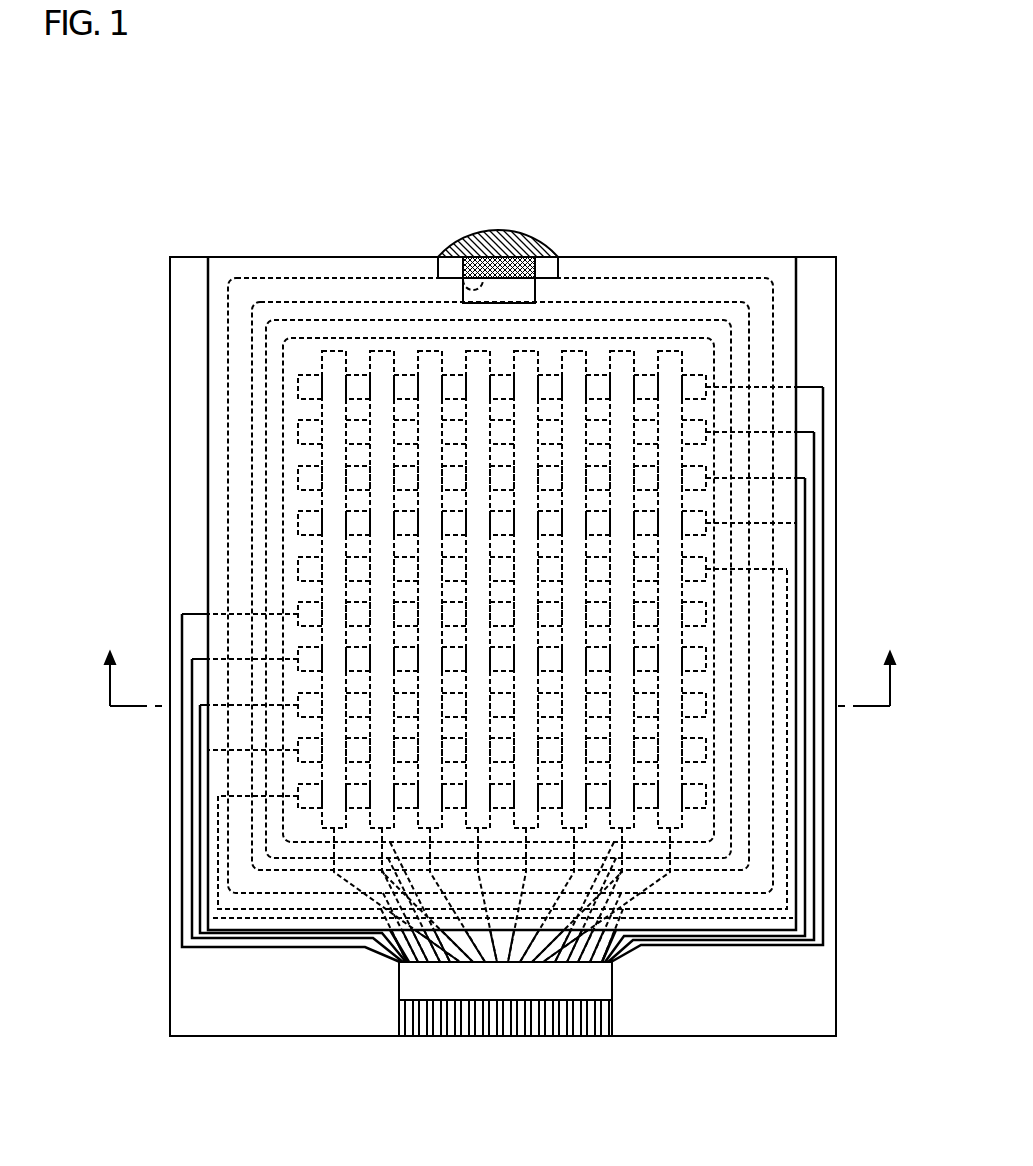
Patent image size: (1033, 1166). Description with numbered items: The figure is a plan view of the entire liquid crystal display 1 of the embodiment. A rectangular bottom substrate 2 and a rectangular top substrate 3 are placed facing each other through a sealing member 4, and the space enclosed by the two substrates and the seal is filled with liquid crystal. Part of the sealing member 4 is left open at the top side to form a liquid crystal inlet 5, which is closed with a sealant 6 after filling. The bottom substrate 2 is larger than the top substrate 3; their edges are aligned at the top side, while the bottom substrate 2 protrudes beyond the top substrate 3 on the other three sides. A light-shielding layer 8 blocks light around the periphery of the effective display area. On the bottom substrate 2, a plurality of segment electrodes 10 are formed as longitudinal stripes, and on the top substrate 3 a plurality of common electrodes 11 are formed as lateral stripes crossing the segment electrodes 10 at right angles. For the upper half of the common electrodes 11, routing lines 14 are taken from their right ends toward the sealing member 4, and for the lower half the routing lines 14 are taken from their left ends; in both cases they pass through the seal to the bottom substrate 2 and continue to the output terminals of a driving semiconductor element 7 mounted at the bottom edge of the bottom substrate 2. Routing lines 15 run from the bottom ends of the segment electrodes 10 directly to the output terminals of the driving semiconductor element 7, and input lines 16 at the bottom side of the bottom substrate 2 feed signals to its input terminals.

The liquid crystal display 1 is at (509, 127).
The bottom substrate 2 is at (207, 1028).
The top substrate 3 is at (312, 258).
The sealing member 4 is at (630, 290).
The liquid crystal inlet 5 is at (465, 262).
The sealant 6 is at (514, 234).
The driving semiconductor element 7 is at (536, 992).
The light-shielding layer 8 is at (383, 330).
The segment electrodes 10 is at (335, 358).
The common electrodes 11 is at (300, 386).
The routing lines 14 is at (822, 506).
The routing lines 15 is at (355, 878).
The input lines 16 is at (608, 1020).